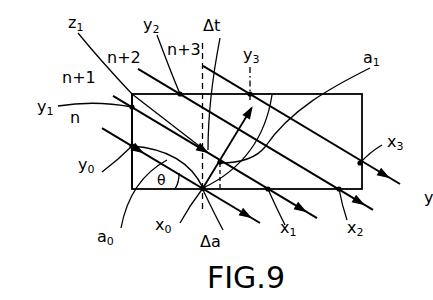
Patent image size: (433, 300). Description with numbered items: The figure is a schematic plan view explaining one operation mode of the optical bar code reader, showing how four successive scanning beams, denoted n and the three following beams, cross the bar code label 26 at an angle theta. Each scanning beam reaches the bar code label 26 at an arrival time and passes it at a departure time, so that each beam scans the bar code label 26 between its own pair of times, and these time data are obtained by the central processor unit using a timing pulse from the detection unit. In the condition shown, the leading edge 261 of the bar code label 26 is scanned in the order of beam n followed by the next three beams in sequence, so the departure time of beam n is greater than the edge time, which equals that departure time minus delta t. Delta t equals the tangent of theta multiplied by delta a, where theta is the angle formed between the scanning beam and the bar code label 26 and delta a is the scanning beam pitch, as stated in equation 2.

The bar code label 26 is at (312, 94).
The leading edge 261 is at (132, 167).
The adjacent figure label 2 is at (428, 36).